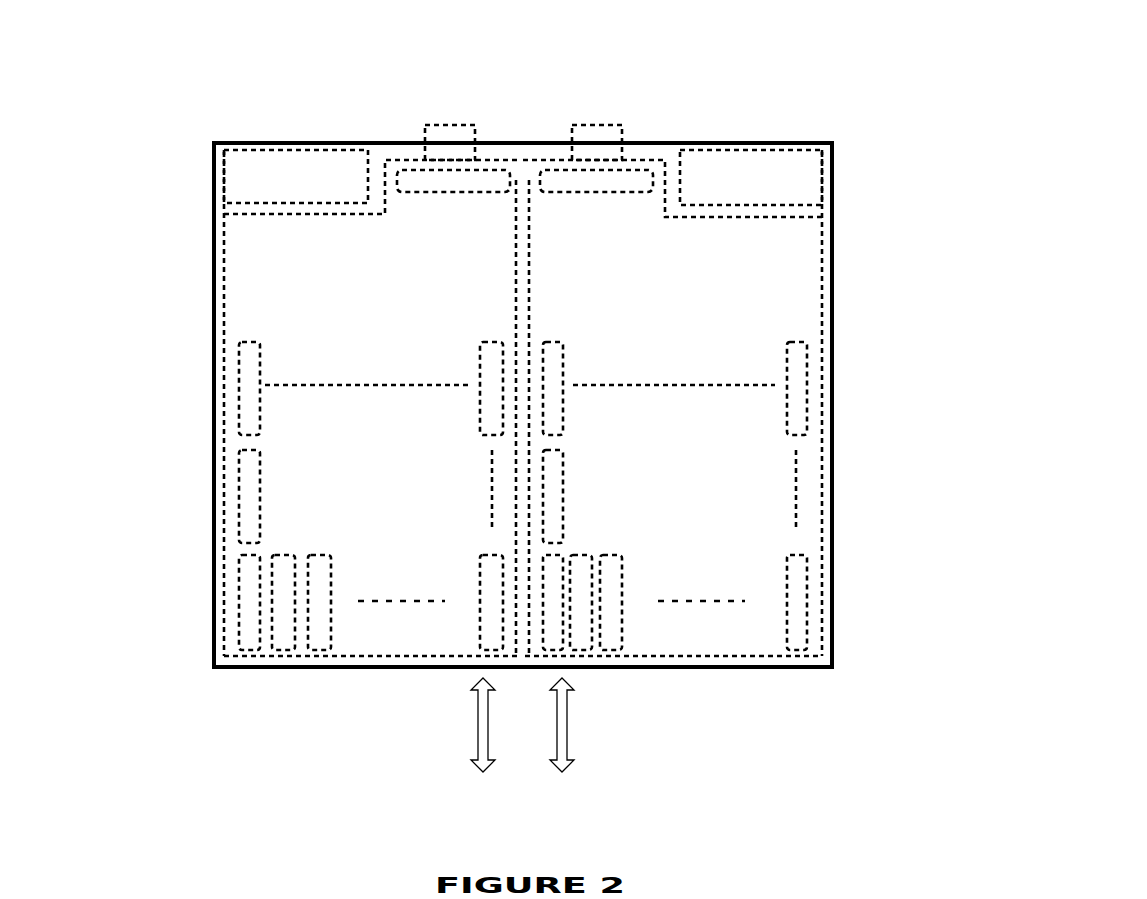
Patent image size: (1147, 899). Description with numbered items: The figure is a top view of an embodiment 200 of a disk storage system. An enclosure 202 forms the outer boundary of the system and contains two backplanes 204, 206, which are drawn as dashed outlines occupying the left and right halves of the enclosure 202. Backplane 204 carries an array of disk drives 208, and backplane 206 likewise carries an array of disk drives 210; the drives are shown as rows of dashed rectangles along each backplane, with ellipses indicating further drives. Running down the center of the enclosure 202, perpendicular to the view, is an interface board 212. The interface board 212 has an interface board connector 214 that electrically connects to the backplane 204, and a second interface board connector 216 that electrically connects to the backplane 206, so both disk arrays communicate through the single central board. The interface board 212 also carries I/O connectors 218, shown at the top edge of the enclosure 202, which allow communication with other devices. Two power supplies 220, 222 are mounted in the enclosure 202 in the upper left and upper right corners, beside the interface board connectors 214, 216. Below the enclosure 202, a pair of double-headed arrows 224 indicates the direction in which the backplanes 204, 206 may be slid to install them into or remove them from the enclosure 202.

The disk storage system embodiment 200 is at (912, 727).
The enclosure 202 is at (832, 462).
The backplane 204 is at (392, 647).
The backplane 206 is at (685, 648).
The array of disk drives 208 is at (255, 593).
The array of disk drives 210 is at (798, 593).
The interface board 212 is at (518, 183).
The interface board connector 214 is at (437, 185).
The interface board connector 216 is at (617, 183).
The I/O connectors 218 is at (690, 125).
The power supply 220 is at (238, 182).
The power supply 222 is at (807, 160).
The arrows 224 is at (557, 720).